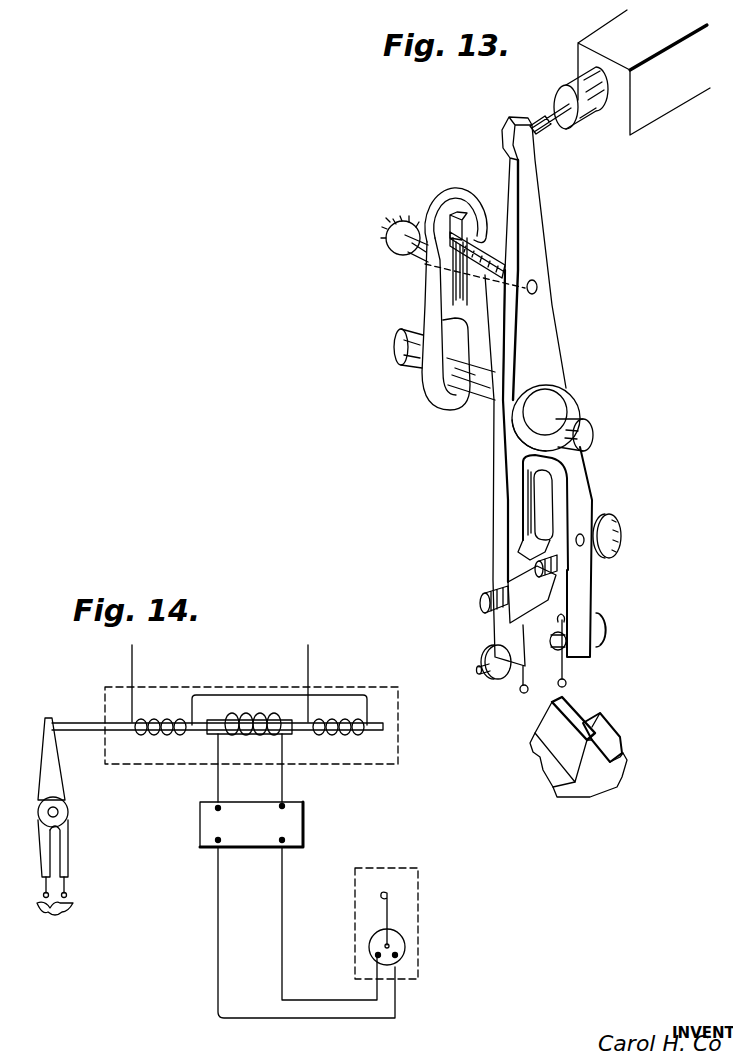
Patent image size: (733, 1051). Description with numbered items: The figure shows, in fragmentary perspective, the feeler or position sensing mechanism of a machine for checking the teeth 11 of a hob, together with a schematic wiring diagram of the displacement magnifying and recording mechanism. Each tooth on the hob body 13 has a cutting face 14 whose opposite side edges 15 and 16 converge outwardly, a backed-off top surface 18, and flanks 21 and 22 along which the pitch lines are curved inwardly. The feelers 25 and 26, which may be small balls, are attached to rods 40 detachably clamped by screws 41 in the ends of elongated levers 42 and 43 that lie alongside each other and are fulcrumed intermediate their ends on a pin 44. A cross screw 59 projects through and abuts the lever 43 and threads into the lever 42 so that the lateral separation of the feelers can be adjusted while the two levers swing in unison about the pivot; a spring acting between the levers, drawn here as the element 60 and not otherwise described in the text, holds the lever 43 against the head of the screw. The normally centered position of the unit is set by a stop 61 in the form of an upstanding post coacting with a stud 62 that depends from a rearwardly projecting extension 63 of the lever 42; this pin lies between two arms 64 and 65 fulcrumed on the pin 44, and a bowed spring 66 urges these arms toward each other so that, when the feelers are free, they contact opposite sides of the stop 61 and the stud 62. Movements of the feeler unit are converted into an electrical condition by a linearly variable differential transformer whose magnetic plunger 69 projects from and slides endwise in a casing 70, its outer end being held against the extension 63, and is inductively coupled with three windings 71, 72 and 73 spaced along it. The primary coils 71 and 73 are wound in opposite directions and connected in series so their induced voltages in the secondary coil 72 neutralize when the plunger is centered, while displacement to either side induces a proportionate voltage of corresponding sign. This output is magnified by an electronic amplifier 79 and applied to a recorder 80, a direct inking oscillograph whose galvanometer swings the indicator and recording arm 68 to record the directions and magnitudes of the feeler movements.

In FIG. 13, the teeth 11 is at (590, 727).
In FIG. 14, the teeth 11 is at (61, 909).
In FIG. 13, the hob body 13 is at (617, 783).
In FIG. 13, the cutting face 14 is at (592, 780).
In FIG. 13, the side edge 15 is at (552, 773).
In FIG. 13, the side edge 16 is at (620, 744).
In FIG. 13, the top surface 18 is at (566, 710).
In FIG. 13, the tooth flank 21 is at (598, 712).
In FIG. 13, the tooth flank 22 is at (550, 734).
In FIG. 13, the feeler 25 is at (569, 681).
In FIG. 14, the feeler 25 is at (42, 893).
In FIG. 13, the feeler 26 is at (522, 695).
In FIG. 14, the feeler 26 is at (70, 895).
In FIG. 13, the rods 40 is at (565, 677).
In FIG. 13, the screws 41 is at (485, 656).
In FIG. 13, the lever 42 is at (509, 514).
In FIG. 14, the lever 42 is at (40, 845).
In FIG. 13, the lever 43 is at (587, 503).
In FIG. 14, the lever 43 is at (65, 845).
In FIG. 13, the pin 44 is at (481, 413).
In FIG. 14, the pin 44 is at (60, 813).
In FIG. 13, the cross screw 59 is at (621, 520).
In FIG. 13, the spring clip 60 is at (498, 487).
In FIG. 13, the stop 61 is at (400, 255).
In FIG. 13, the stud 62 is at (498, 276).
In FIG. 13, the extension 63 is at (538, 238).
In FIG. 14, the extension 63 is at (46, 763).
In FIG. 13, the arm 64 is at (474, 240).
In FIG. 13, the arm 65 is at (440, 283).
In FIG. 13, the bowed spring 66 is at (480, 195).
In FIG. 14, the indicator 68 is at (388, 895).
In FIG. 13, the magnetic plunger 69 is at (558, 122).
In FIG. 14, the magnetic plunger 69 is at (82, 735).
In FIG. 13, the casing 70 is at (599, 38).
In FIG. 14, the casing 70 is at (242, 683).
In FIG. 14, the primary coil 71 is at (164, 745).
In FIG. 14, the secondary coil 72 is at (258, 745).
In FIG. 14, the primary coil 73 is at (345, 740).
In FIG. 14, the electronic amplifier 79 is at (300, 825).
In FIG. 14, the recorder 80 is at (420, 905).